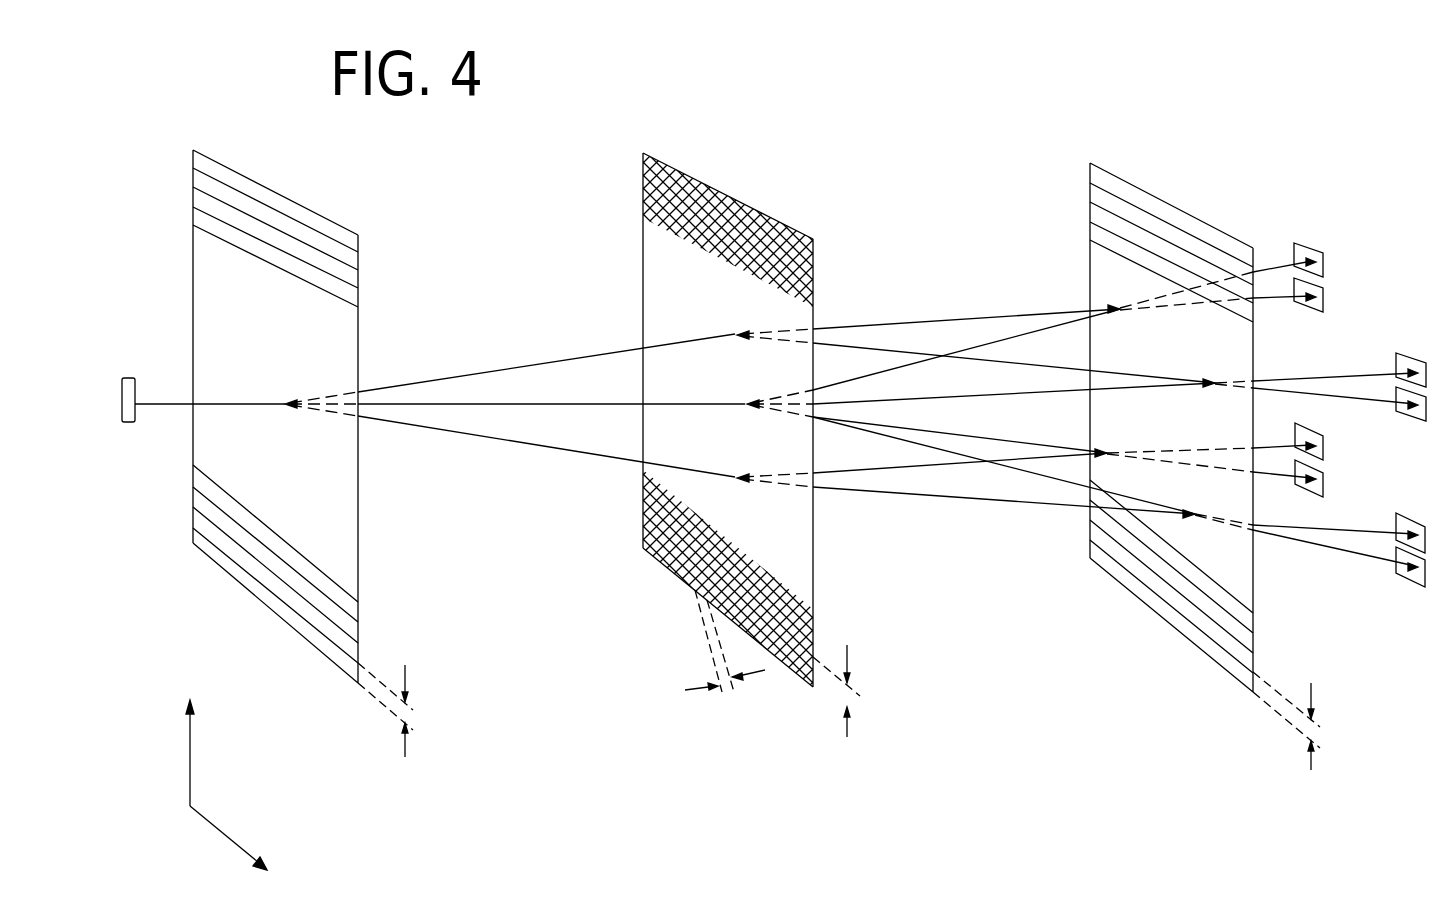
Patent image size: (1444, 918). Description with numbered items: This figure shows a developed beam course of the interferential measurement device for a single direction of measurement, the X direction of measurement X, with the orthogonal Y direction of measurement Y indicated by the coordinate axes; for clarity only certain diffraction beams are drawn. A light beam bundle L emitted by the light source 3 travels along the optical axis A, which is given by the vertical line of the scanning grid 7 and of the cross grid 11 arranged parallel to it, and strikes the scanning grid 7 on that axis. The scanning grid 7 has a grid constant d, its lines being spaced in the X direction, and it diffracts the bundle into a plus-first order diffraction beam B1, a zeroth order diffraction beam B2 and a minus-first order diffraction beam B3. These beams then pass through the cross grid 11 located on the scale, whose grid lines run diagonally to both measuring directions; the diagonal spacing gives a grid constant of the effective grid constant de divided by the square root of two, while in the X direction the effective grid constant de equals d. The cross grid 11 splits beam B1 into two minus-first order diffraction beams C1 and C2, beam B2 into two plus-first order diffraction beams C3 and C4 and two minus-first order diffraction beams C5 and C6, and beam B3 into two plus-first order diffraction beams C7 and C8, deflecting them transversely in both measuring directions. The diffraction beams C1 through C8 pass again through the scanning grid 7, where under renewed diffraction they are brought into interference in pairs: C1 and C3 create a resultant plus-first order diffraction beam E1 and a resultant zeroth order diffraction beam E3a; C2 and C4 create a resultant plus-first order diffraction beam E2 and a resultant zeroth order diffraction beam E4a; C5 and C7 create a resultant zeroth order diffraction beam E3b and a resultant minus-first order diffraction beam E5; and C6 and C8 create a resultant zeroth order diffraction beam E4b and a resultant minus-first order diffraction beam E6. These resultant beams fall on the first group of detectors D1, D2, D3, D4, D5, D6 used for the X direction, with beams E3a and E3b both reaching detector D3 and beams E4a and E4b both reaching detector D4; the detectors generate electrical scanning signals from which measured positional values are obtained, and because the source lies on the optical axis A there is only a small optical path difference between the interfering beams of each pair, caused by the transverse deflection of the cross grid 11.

The light source 3 is at (128, 376).
The scanning grid 7 is at (362, 258).
The cross grid 11 is at (765, 220).
The light beam bundle L is at (177, 401).
The optical axis A is at (241, 410).
The +1st order diffraction beam B1 is at (530, 366).
The 0th order diffraction beam B2 is at (604, 405).
The −1st order diffraction beam B3 is at (496, 440).
The −1st order diffraction beam C1 is at (954, 315).
The −1st order diffraction beam C2 is at (872, 347).
The +1st order diffraction beam C3 is at (878, 373).
The +1st order diffraction beam C4 is at (977, 397).
The −1st order diffraction beam C5 is at (967, 435).
The −1st order diffraction beam C6 is at (870, 432).
The +1st order diffraction beam C7 is at (938, 468).
The +1st order diffraction beam C8 is at (993, 500).
The resultant +1st order diffraction beam E1 is at (1263, 266).
The resultant +1st order diffraction beam E2 is at (1345, 378).
The resultant 0th order diffraction beam E3a is at (1273, 303).
The resultant 0th order diffraction beam E3b is at (1268, 445).
The resultant 0th order diffraction beam E4a is at (1330, 397).
The resultant 0th order diffraction beam E4b is at (1335, 531).
The resultant −1st order diffraction beam E5 is at (1272, 474).
The resultant −1st order diffraction beam E6 is at (1330, 550).
The detector D1 is at (1326, 268).
The detector D2 is at (1410, 364).
The detector D3 is at (1326, 300).
The detector D4 is at (1408, 420).
The detector D5 is at (1328, 483).
The detector D6 is at (1410, 585).
The grid constant d is at (851, 716).
The effective grid constant de is at (630, 678).
The X direction of measurement X is at (190, 741).
The Y direction of measurement Y is at (239, 846).